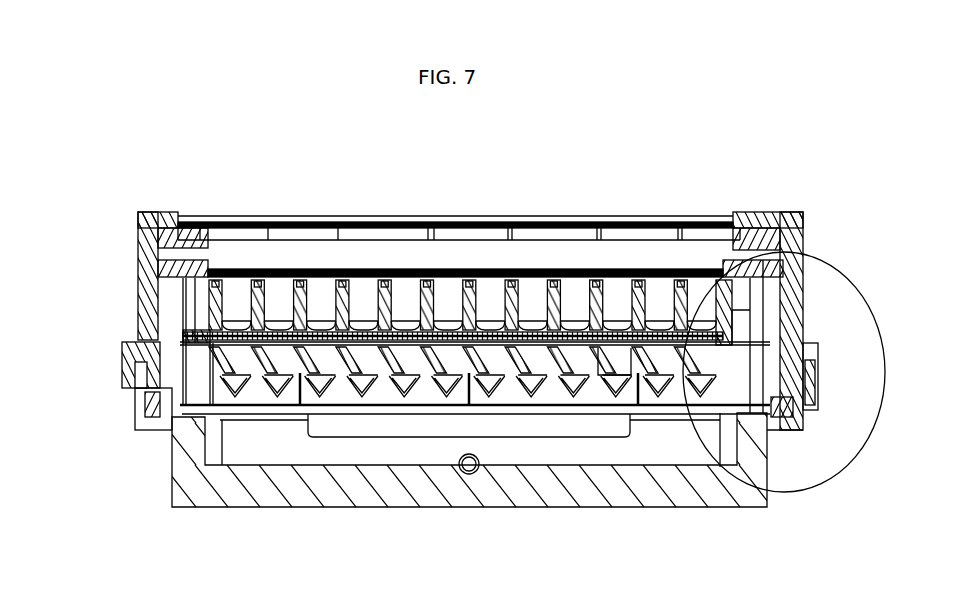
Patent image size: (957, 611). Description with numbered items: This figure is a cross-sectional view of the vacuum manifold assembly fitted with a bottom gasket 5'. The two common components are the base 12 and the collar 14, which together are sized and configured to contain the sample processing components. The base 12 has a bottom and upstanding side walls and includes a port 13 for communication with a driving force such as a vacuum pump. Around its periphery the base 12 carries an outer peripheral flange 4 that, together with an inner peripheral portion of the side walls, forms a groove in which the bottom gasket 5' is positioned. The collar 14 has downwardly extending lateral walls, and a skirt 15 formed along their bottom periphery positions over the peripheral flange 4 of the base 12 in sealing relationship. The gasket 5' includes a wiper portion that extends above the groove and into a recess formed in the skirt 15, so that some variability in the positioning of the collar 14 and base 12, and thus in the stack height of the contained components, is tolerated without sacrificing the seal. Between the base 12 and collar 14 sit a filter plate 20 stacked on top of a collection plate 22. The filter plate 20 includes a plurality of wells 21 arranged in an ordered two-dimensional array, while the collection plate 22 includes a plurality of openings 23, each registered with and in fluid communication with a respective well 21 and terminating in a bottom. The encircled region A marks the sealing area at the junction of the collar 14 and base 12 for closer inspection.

The outer peripheral flange 4 is at (800, 419).
The bottom gasket 5' is at (117, 414).
The base 12 is at (766, 508).
The port 13 is at (470, 472).
The collar 14 is at (804, 223).
The skirt 15 is at (818, 381).
The filter plate 20 is at (182, 292).
The wells 21 is at (534, 292).
The collection plate 22 is at (123, 352).
The openings 23 is at (627, 368).
The detail region A is at (870, 300).